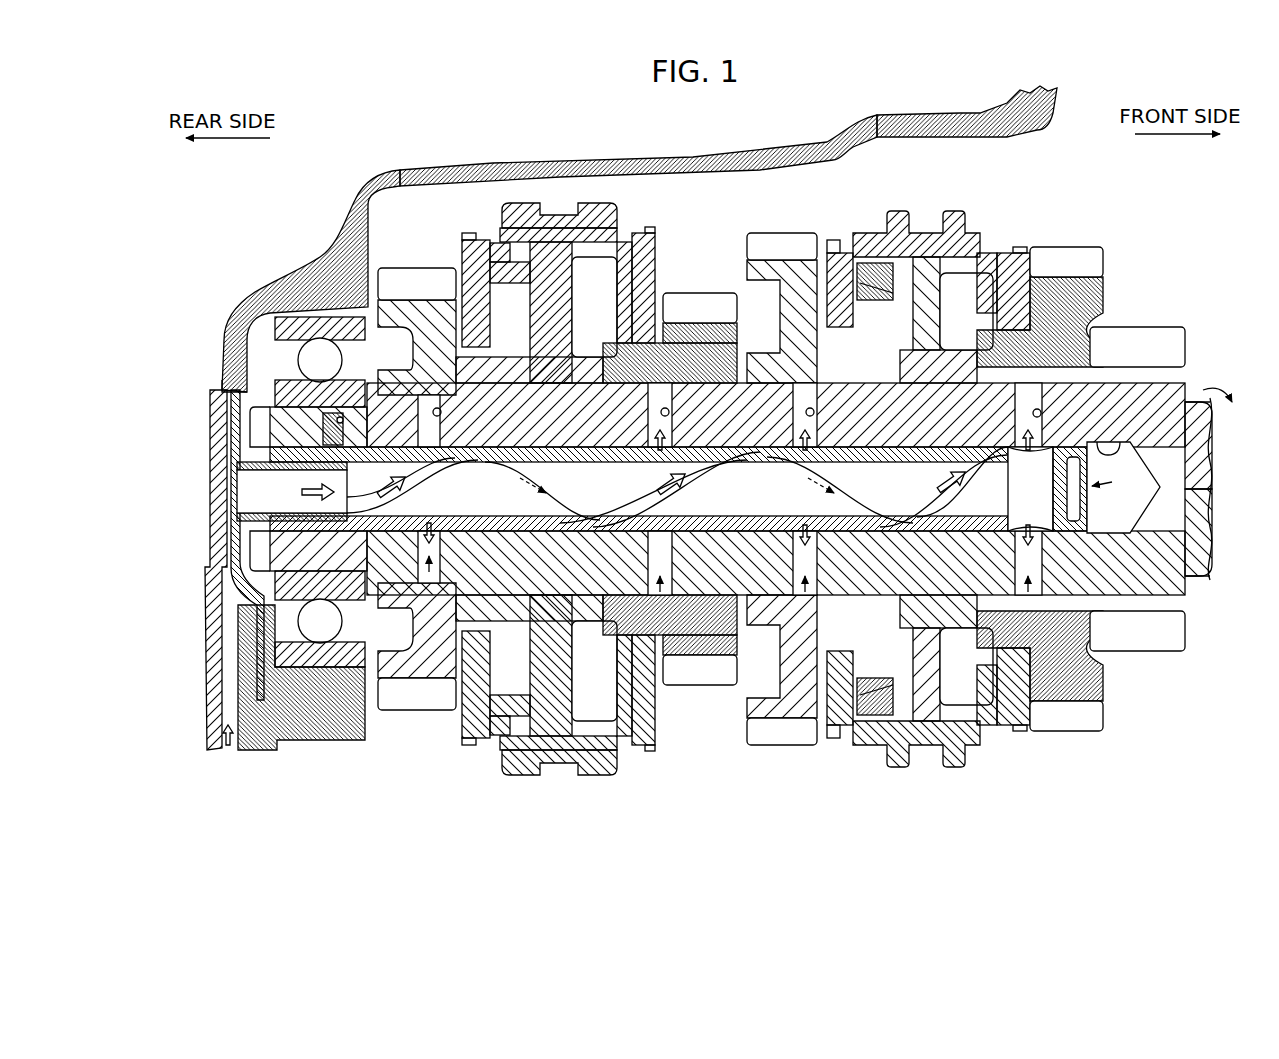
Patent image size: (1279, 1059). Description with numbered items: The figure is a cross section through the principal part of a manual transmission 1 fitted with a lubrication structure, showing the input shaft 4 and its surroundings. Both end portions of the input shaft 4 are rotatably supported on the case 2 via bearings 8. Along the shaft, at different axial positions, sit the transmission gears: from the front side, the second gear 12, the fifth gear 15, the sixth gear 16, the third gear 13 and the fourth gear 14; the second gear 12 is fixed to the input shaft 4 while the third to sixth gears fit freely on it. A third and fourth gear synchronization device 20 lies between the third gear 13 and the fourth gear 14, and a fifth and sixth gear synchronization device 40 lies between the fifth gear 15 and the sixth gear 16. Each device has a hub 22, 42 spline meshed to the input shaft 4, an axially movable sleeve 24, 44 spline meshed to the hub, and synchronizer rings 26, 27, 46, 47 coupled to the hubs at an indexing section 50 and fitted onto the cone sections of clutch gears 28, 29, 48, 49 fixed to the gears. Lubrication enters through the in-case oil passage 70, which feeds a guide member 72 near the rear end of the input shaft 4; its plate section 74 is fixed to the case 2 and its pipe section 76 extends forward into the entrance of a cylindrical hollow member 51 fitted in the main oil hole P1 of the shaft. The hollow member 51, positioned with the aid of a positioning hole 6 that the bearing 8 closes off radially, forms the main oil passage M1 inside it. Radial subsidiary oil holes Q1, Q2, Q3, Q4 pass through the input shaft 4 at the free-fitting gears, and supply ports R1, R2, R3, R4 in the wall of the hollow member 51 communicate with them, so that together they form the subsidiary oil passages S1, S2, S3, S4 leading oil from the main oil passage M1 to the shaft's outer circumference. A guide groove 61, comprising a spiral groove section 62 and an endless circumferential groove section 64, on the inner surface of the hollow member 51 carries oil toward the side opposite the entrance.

The manual transmission 1 is at (322, 155).
The case 2 is at (262, 292).
The input shaft 4 is at (1208, 483).
The positioning hole 6 is at (346, 420).
The bearing 8 is at (302, 325).
The second gear 12 is at (1142, 327).
The third gear 13 is at (700, 293).
The fourth gear 14 is at (413, 270).
The fifth gear 15 is at (1066, 247).
The sixth gear 16 is at (772, 233).
The third and fourth gear synchronization device 20 is at (581, 188).
The hub 22 is at (573, 331).
The sleeve 24 is at (525, 203).
The synchronizer ring 26 is at (621, 245).
The synchronizer ring 27 is at (497, 243).
The clutch gear 28 is at (655, 240).
The clutch gear 29 is at (468, 236).
The fifth and sixth gear synchronization device 40 is at (932, 157).
The hub 42 is at (943, 336).
The sleeve 44 is at (917, 233).
The synchronizer ring 46 is at (988, 253).
The synchronizer ring 47 is at (860, 260).
The clutch gear 48 is at (1018, 253).
The clutch gear 49 is at (835, 253).
The indexing section 50 is at (877, 263).
The hollow member 51 is at (1130, 455).
The guide groove 61 is at (916, 485).
The spiral groove section 62 is at (427, 475).
The endless circumferential groove section 64 is at (1020, 504).
The in-case oil passage 70 is at (226, 650).
The guide member 72 is at (225, 376).
The plate section 74 is at (233, 438).
The pipe section 76 is at (258, 521).
The main oil hole P1 is at (1108, 452).
The first subsidiary oil hole Q1 is at (1045, 414).
The second subsidiary oil hole Q2 is at (820, 414).
The third subsidiary oil hole Q3 is at (675, 414).
The fourth subsidiary oil hole Q4 is at (447, 415).
The first supply port R1 is at (1013, 447).
The second supply port R2 is at (800, 517).
The third supply port R3 is at (652, 470).
The fourth supply port R4 is at (432, 520).
The first subsidiary oil passage S1 is at (1053, 637).
The second subsidiary oil passage S2 is at (806, 582).
The third subsidiary oil passage S3 is at (661, 582).
The fourth subsidiary oil passage S4 is at (428, 577).
The main oil passage M1 is at (706, 512).